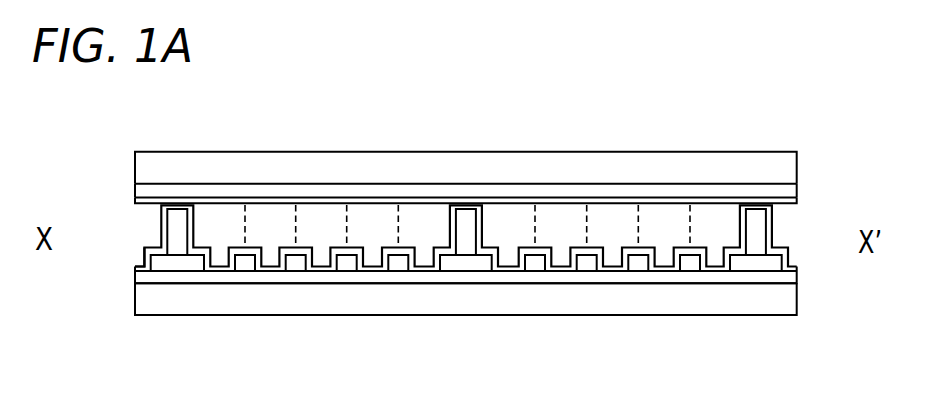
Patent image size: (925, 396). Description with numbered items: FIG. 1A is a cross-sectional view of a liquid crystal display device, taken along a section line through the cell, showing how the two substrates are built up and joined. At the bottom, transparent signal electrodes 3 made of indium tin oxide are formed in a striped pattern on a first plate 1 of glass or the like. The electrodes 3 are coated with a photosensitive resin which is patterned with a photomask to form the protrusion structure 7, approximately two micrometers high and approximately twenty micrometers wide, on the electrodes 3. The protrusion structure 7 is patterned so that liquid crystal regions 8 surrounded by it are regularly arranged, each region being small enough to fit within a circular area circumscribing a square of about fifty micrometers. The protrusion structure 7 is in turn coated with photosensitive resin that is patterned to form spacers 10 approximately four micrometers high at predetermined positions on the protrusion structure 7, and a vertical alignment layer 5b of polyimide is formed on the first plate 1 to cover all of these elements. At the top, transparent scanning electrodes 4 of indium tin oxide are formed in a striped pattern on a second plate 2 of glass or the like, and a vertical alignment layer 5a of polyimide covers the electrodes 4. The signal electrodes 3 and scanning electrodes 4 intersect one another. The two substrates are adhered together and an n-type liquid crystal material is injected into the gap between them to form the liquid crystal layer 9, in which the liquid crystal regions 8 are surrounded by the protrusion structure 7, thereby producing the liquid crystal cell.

The first plate 1 is at (745, 303).
The second plate 2 is at (680, 168).
The signal electrodes 3 is at (795, 276).
The scanning electrodes 4 is at (783, 189).
The vertical alignment layer 5a is at (135, 200).
The vertical alignment layer 5b is at (135, 266).
The protrusion structure 7 is at (190, 263).
The liquid crystal regions 8 is at (418, 250).
The liquid crystal layer 9 is at (380, 213).
The spacers 10 is at (177, 213).